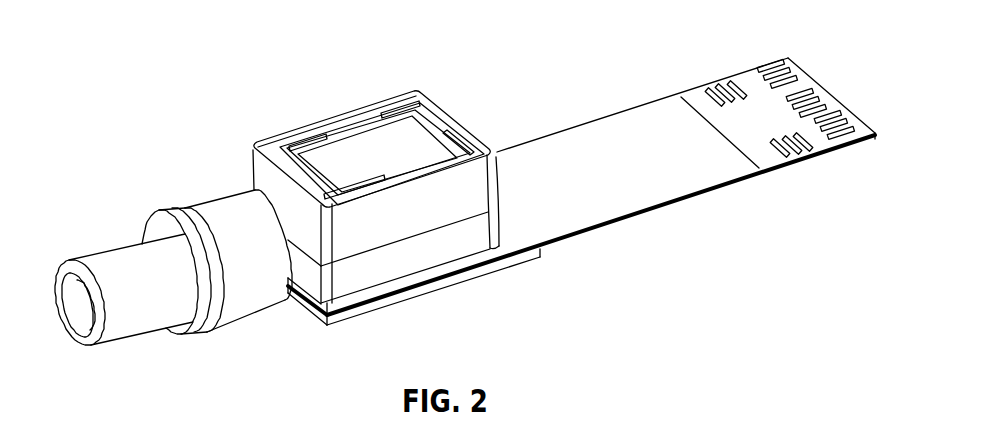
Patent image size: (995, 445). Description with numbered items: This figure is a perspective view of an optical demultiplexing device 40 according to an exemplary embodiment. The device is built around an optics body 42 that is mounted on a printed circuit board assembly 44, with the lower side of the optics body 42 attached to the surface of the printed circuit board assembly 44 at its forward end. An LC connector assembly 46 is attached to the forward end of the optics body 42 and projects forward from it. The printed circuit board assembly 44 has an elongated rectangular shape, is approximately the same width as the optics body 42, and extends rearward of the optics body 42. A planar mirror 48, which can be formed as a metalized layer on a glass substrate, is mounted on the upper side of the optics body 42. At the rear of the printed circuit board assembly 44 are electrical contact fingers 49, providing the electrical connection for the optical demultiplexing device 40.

The optical demultiplexing device 40 is at (181, 69).
The optics body 42 is at (361, 110).
The printed circuit board assembly 44 is at (639, 108).
The LC connector assembly 46 is at (159, 211).
The planar mirror 48 is at (427, 137).
The electrical contact fingers 49 is at (718, 82).